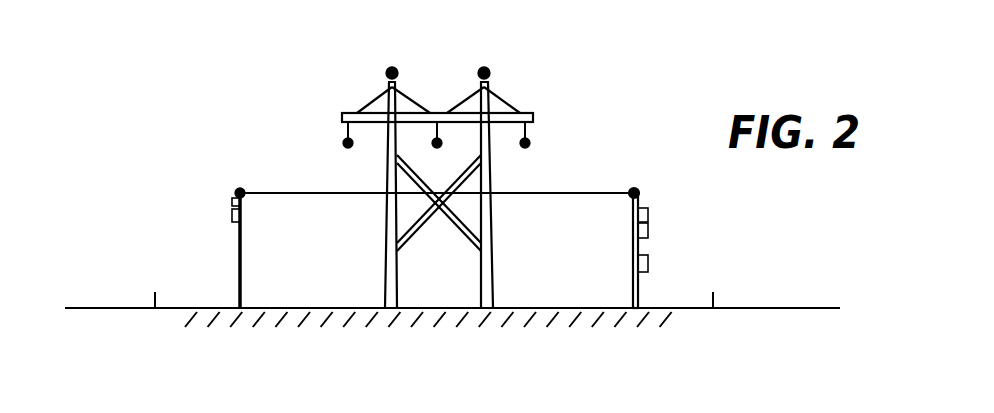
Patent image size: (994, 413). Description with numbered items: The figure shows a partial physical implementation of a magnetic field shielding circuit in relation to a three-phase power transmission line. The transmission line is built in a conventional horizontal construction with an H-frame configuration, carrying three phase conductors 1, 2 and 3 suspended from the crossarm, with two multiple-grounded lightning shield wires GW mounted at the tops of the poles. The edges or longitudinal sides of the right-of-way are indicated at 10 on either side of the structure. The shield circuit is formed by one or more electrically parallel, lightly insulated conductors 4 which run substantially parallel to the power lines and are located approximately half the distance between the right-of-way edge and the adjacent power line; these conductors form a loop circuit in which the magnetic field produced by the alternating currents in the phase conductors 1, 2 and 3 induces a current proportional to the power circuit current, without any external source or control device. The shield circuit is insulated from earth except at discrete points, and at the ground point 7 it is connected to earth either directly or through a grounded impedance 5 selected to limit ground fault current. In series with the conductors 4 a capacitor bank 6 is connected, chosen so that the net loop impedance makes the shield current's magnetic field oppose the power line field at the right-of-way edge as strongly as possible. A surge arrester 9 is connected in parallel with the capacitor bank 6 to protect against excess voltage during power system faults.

The lightning shield wire GW is at (392, 66).
The phase conductor 1 is at (342, 144).
The phase conductor 2 is at (440, 146).
The phase conductor 3 is at (530, 144).
The shield circuit conductor 4 is at (299, 192).
The grounding impedance 5 is at (231, 217).
The capacitor bank 6 is at (648, 213).
The ground point 7 is at (243, 307).
The surge arrester 9 is at (648, 262).
The right-of-way edge 10 is at (155, 300).